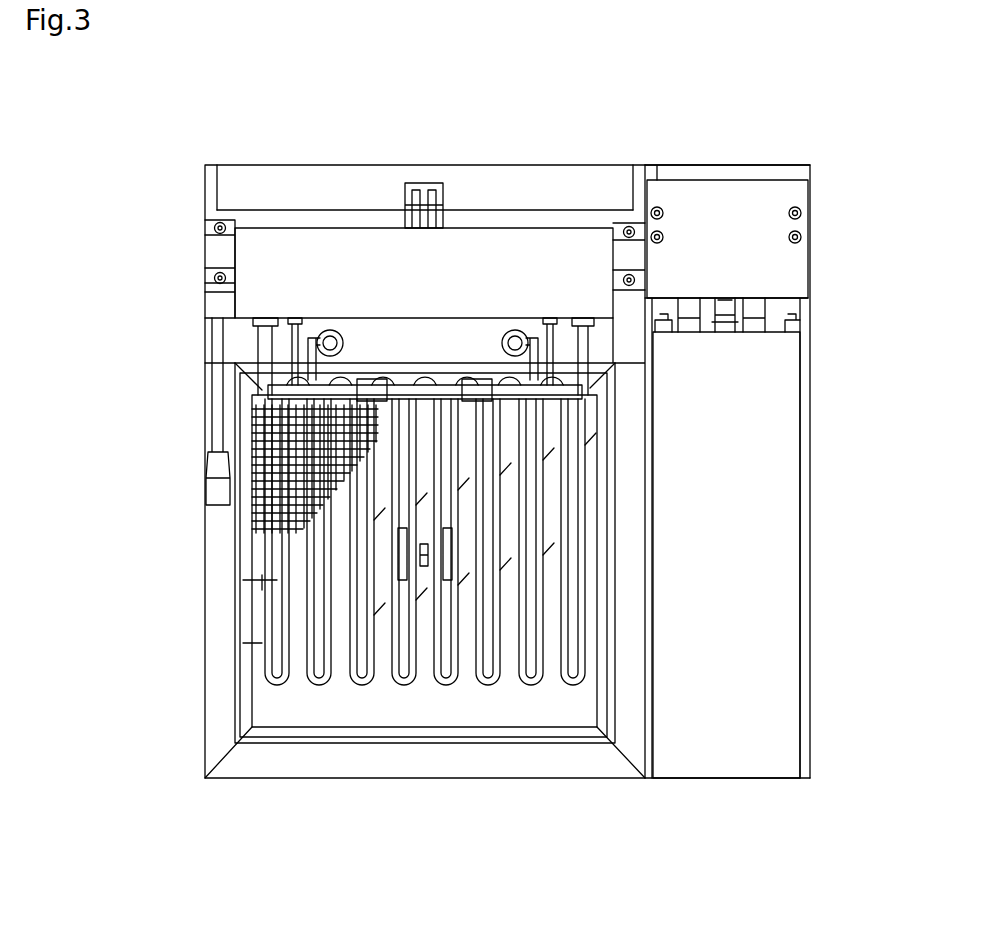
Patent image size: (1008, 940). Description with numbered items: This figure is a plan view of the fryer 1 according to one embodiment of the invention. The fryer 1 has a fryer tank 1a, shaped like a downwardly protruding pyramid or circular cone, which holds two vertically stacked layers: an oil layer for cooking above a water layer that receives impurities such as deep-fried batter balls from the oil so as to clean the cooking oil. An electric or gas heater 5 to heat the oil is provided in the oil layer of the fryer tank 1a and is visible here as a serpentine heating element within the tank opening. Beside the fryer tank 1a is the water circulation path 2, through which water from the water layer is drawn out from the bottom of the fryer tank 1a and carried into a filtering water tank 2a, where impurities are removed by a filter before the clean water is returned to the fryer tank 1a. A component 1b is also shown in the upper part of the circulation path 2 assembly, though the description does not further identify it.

The fryer 1 is at (172, 203).
The fryer tank 1a is at (340, 715).
The terminal block 1b is at (805, 300).
The water circulation path 2 is at (779, 521).
The filtering water tank 2a is at (718, 778).
The heater 5 is at (263, 642).